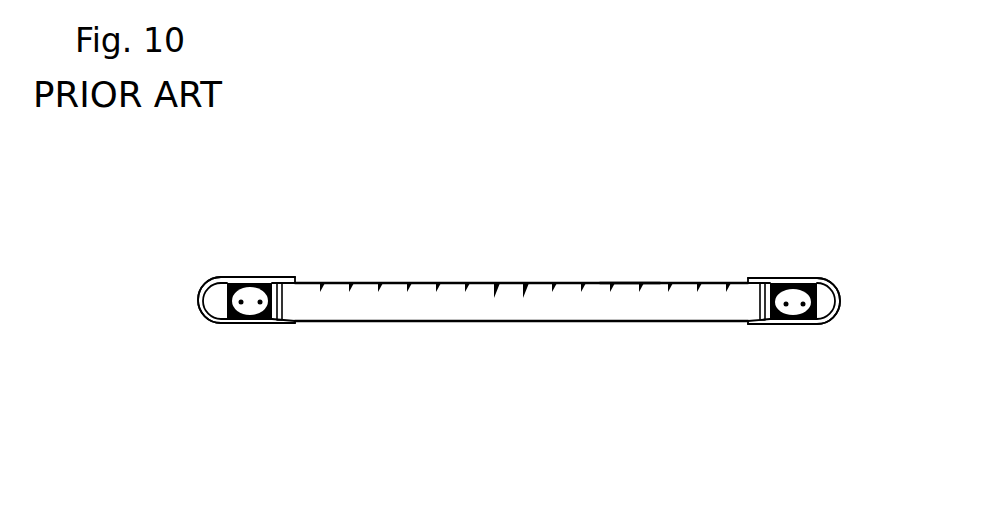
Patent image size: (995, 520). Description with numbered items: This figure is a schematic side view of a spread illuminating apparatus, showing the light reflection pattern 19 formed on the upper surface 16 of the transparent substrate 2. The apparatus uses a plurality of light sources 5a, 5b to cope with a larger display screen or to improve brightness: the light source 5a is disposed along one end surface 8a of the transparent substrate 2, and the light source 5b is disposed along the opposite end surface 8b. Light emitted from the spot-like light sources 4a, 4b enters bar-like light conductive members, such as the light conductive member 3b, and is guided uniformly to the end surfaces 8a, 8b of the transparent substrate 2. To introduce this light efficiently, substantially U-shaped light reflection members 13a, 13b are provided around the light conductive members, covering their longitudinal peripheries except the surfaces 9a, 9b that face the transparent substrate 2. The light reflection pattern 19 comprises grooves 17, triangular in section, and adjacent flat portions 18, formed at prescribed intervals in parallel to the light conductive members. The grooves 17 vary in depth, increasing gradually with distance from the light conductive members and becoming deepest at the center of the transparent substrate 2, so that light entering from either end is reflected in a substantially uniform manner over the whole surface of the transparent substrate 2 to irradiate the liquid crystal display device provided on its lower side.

The transparent substrate 2 is at (462, 305).
The light conductive member 3b is at (267, 320).
The spot-like light source 4a is at (838, 390).
The spot-like light source 4b is at (235, 351).
The light source 5a is at (779, 366).
The light source 5b is at (250, 366).
The end surface 8a is at (766, 327).
The end surface 8b is at (242, 315).
The surface facing the transparent substrate 9a is at (760, 313).
The surface facing the transparent substrate 9b is at (285, 312).
The light reflection member 13a is at (843, 302).
The light reflection member 13b is at (198, 306).
The upper surface 16 is at (625, 283).
The grooves 17 is at (497, 283).
The flat portions 18 is at (539, 238).
The light reflection pattern 19 is at (525, 214).